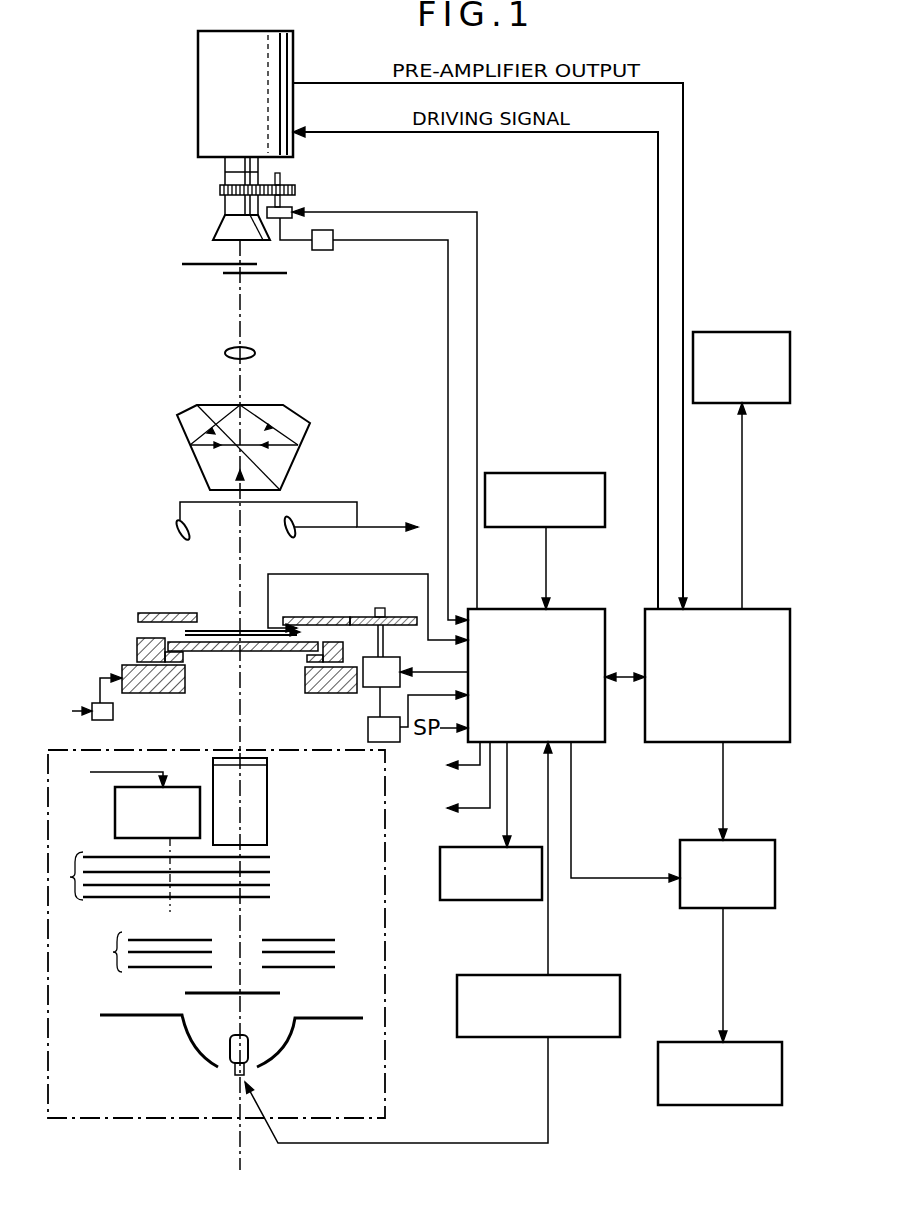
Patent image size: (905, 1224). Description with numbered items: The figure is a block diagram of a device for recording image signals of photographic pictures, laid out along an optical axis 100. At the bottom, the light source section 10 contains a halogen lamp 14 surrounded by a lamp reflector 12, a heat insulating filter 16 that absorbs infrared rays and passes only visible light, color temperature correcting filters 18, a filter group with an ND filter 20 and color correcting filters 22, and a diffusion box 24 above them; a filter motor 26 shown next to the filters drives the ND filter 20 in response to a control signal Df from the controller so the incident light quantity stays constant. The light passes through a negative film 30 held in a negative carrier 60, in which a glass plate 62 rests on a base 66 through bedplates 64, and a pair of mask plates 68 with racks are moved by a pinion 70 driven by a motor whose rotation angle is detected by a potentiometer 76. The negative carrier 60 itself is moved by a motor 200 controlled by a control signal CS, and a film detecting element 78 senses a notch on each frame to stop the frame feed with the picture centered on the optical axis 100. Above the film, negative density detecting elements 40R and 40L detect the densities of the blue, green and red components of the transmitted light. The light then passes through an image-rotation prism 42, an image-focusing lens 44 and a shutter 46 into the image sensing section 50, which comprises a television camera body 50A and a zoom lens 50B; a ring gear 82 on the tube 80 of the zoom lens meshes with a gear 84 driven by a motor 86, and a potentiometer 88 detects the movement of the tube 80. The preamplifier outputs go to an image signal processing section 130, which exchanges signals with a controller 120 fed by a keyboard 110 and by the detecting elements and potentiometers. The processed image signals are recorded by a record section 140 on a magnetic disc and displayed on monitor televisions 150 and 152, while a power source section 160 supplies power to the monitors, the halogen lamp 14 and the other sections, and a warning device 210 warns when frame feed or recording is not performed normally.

The light source section 10 is at (385, 898).
The lamp reflector 12 is at (188, 1046).
The halogen lamp 14 is at (248, 1045).
The heat insulating filter 16 is at (280, 993).
The color temperature correcting filters 18 is at (113, 955).
The ND filter 20 is at (97, 851).
The color correcting filters 22 is at (70, 880).
The diffusion box 24 is at (253, 800).
The filter motor 26 is at (190, 786).
The negative film 30 is at (225, 630).
The negative density detecting element 40L is at (175, 522).
The negative density detecting element 40R is at (294, 516).
The image-rotation prism 42 is at (300, 410).
The image-focusing lens 44 is at (256, 352).
The shutter 46 is at (282, 274).
The image sensing section 50 is at (305, 62).
The television camera body 50A is at (200, 96).
The zoom lens 50B is at (212, 196).
The negative carrier 60 is at (102, 652).
The glass plate 62 is at (258, 652).
The bedplate 64 is at (140, 640).
The base 66 is at (185, 680).
The mask plate 68 is at (162, 612).
The pinion 70 is at (385, 617).
The potentiometer 76 is at (368, 727).
The film detecting element 78 is at (278, 617).
The tube 80 is at (225, 212).
The ring gear 82 is at (222, 188).
The gear 84 is at (282, 188).
The motor 86 is at (292, 208).
The potentiometer 88 is at (333, 250).
The optical axis 100 is at (240, 1143).
The keyboard 110 is at (525, 472).
The controller 120 is at (578, 608).
The image signal processing section 130 is at (682, 742).
The record section 140 is at (752, 908).
The monitor television 150 is at (745, 331).
The monitor television 152 is at (735, 1105).
The power source section 160 is at (485, 1037).
The motor 200 is at (113, 714).
The warning device 210 is at (522, 900).